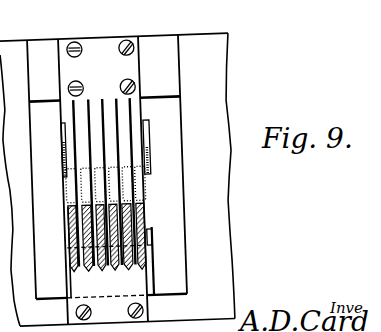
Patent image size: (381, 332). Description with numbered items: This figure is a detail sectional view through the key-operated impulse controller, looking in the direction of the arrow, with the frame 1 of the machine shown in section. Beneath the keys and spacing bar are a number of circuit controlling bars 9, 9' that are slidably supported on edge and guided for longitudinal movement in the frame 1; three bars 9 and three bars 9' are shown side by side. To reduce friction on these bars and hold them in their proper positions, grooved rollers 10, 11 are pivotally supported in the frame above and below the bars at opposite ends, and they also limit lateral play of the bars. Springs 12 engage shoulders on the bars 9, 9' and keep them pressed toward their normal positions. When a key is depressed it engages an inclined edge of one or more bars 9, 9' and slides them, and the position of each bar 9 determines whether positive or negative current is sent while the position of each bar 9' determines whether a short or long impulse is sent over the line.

The body plate 1 is at (220, 37).
The circuit controlling bar 9 is at (90, 152).
The circuit controlling bar 9' is at (133, 248).
The grooved roller 10 is at (175, 22).
The grooved roller 11 is at (147, 264).
The spring 12 is at (100, 144).